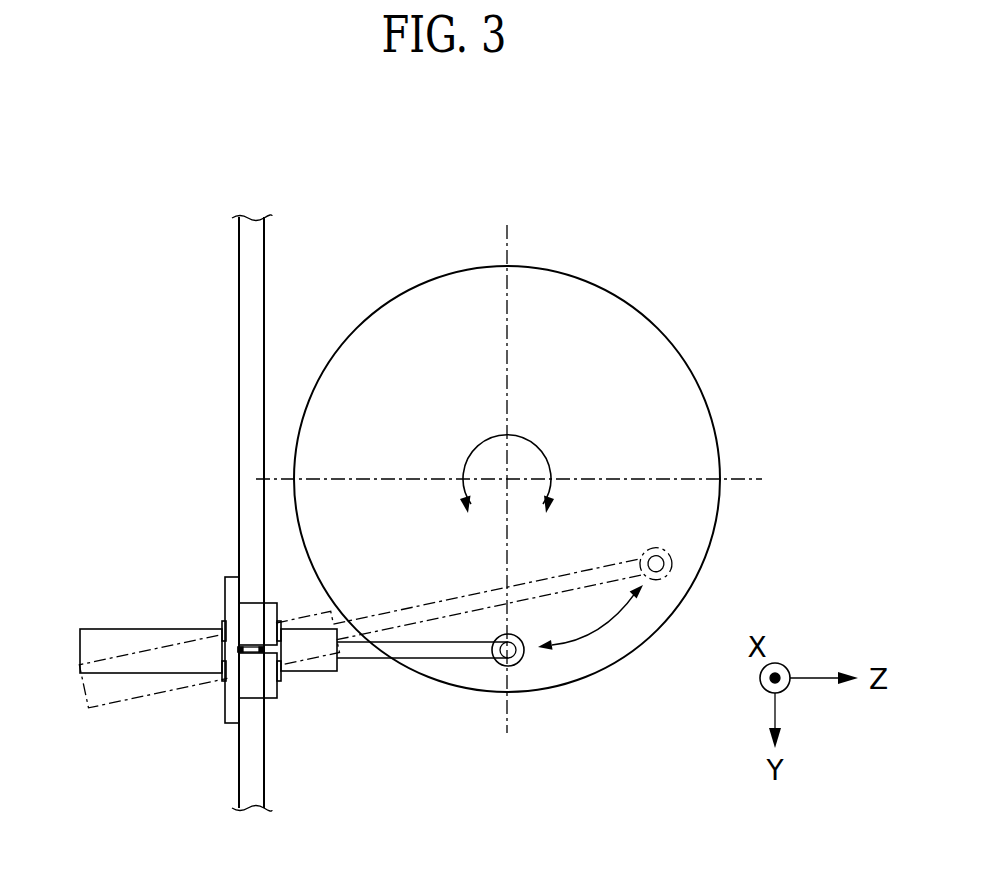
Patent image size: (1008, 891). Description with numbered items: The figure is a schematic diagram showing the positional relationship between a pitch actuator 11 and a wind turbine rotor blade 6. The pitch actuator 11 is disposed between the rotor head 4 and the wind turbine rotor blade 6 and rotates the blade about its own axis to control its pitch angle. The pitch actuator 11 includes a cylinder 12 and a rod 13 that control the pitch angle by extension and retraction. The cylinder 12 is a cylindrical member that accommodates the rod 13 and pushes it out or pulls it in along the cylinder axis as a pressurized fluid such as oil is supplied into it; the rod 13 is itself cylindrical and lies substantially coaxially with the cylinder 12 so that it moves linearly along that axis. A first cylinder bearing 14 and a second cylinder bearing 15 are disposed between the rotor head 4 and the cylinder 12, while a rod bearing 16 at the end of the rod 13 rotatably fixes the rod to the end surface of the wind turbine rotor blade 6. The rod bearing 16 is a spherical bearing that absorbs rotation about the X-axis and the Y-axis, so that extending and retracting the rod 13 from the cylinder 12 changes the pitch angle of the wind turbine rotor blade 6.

The rotor head 4 is at (248, 387).
The wind turbine rotor blade 6 is at (668, 376).
The pitch actuator 11 is at (140, 758).
The cylinder 12 is at (95, 637).
The rod 13 is at (427, 658).
The first cylinder bearing 14 is at (223, 623).
The second cylinder bearing 15 is at (267, 690).
The rod bearing 16 is at (521, 660).